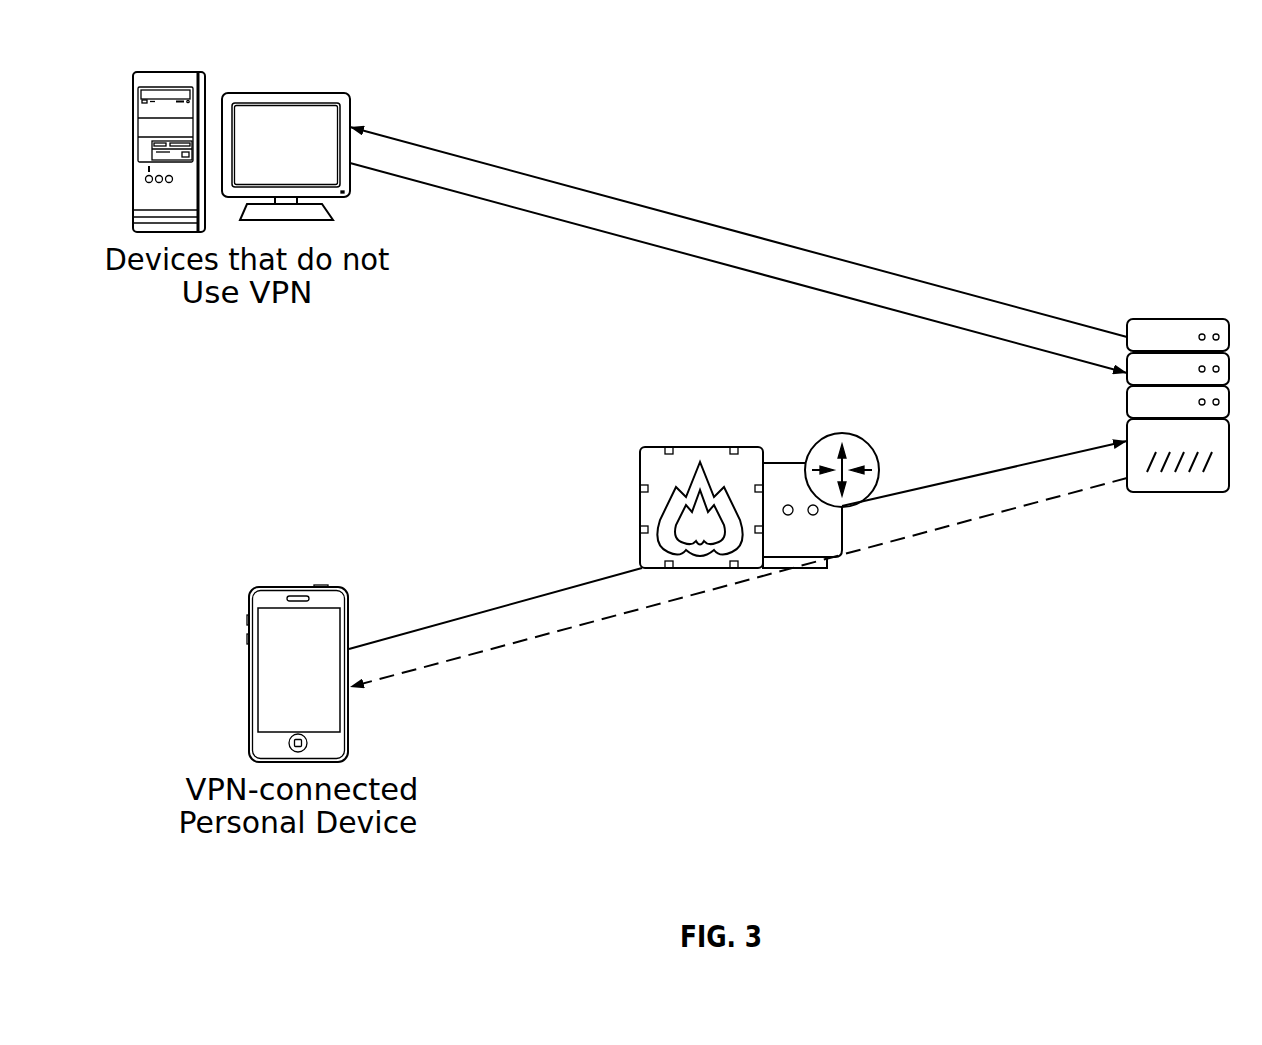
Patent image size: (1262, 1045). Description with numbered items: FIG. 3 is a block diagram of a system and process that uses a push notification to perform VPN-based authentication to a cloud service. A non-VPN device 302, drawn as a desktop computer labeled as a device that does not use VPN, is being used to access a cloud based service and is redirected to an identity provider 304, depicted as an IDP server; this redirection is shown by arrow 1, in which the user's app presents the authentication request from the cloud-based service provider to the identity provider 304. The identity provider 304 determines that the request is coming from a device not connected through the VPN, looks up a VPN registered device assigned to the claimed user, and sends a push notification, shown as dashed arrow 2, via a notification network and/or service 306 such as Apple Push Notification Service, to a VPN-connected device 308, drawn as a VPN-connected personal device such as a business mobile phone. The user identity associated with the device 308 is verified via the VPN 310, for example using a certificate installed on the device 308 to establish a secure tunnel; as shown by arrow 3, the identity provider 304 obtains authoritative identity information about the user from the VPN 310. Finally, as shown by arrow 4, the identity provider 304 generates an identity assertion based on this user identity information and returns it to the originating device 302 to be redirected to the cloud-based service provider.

The non-VPN device 302 is at (286, 93).
The identity provider 304 is at (1178, 319).
The notification network and/or service 306 is at (957, 523).
The VPN-connected device 308 is at (304, 587).
The VPN 310 is at (640, 468).
The arrow 1 is at (738, 268).
The arrow 2 is at (565, 637).
The arrow 3 is at (984, 473).
The arrow 4 is at (738, 232).